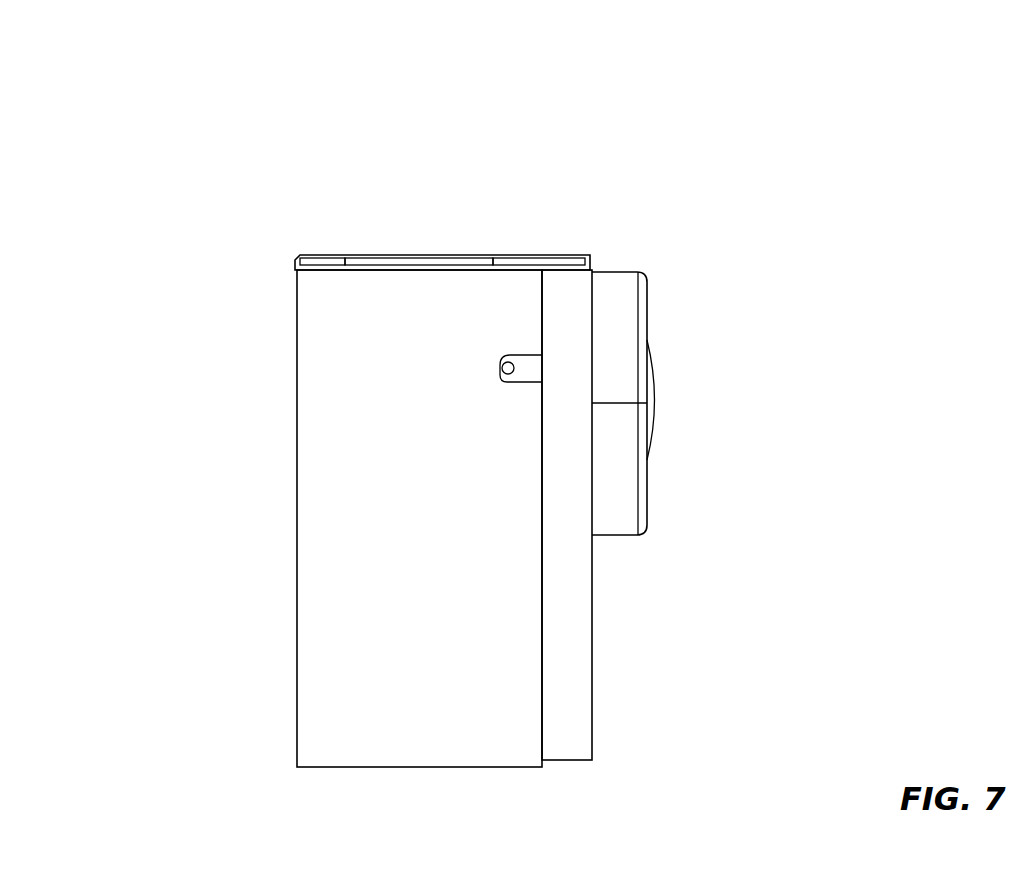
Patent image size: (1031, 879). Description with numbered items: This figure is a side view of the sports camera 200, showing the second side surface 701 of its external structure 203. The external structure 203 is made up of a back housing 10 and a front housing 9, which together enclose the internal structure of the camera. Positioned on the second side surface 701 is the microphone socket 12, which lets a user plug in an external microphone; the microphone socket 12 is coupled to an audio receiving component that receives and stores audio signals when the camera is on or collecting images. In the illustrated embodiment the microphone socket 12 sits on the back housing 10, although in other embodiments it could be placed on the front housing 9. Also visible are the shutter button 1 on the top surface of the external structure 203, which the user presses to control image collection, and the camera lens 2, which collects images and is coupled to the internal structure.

The shutter button 1 is at (428, 258).
The microphone socket 12 is at (509, 366).
The camera lens 2 is at (615, 333).
The sports camera 200 is at (743, 273).
The second side surface 701 is at (352, 518).
The external structure 203 is at (622, 537).
The back housing 10 is at (322, 738).
The front housing 9 is at (568, 722).